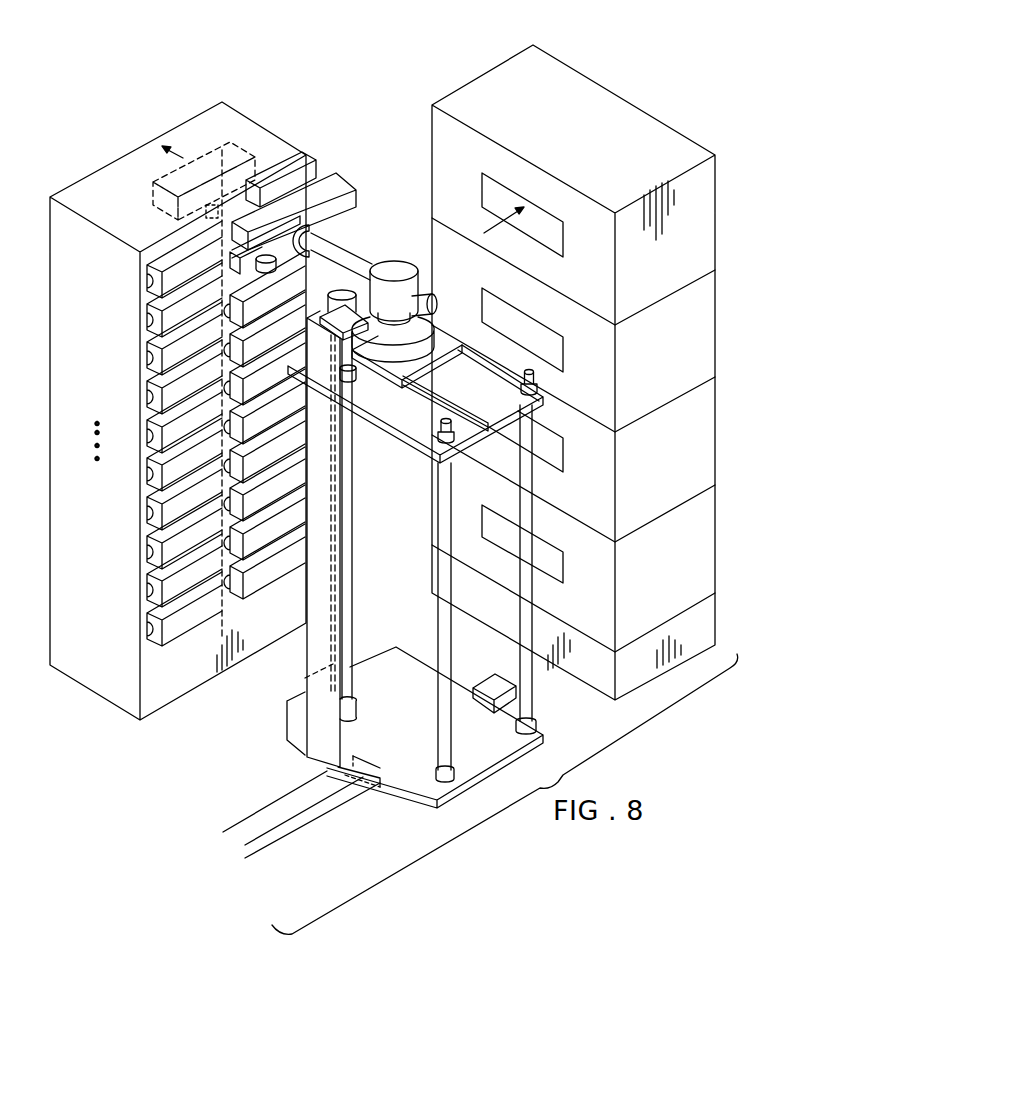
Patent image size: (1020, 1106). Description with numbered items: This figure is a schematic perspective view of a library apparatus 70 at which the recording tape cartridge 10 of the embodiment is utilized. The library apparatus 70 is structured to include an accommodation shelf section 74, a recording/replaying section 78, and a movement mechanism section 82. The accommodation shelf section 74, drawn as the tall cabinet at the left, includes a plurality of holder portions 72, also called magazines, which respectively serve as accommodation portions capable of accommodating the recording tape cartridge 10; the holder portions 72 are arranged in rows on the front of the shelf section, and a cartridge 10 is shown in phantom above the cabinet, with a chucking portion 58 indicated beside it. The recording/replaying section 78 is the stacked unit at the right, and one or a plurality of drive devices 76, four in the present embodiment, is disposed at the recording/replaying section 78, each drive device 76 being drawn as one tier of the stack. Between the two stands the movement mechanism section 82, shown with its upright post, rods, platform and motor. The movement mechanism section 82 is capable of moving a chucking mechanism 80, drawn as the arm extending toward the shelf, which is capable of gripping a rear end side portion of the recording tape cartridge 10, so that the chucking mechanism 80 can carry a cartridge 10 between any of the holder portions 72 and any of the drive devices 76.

The recording tape cartridge 10 is at (261, 153).
The tray 58 is at (246, 194).
The library apparatus 70 is at (351, 70).
The holder portion 72 is at (278, 186).
The accommodation shelf section 74 is at (113, 160).
The drive device 76 is at (708, 246).
The recording/replaying section 78 is at (610, 80).
The chucking mechanism 80 is at (343, 181).
The movement mechanism section 82 is at (395, 258).